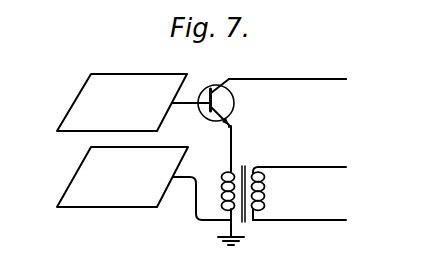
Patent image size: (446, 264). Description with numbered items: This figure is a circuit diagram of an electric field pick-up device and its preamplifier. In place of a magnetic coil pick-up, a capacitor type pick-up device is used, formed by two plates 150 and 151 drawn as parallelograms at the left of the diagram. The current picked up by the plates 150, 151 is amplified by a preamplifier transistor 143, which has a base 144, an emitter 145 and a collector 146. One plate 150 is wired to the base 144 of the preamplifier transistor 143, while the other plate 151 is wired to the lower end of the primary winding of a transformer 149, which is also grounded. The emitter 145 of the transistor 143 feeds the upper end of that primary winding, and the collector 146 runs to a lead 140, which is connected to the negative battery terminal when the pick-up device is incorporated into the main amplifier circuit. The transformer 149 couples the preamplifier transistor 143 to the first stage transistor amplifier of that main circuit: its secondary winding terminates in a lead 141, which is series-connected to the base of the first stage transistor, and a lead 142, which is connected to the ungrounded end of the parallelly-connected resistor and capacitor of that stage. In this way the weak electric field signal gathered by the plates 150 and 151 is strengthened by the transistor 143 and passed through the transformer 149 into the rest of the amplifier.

The lead 140 is at (338, 70).
The lead 141 is at (334, 166).
The lead 142 is at (334, 219).
The preamplifier transistor 143 is at (235, 99).
The base 144 is at (210, 89).
The emitter 145 is at (227, 111).
The collector 146 is at (223, 87).
The transformer 149 is at (243, 168).
The plate 150 is at (82, 96).
The plate 151 is at (80, 176).